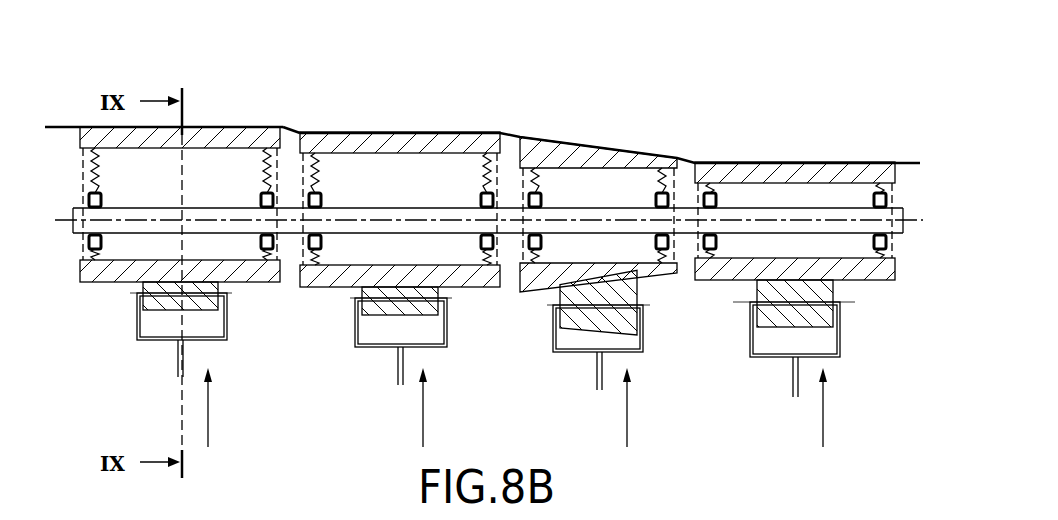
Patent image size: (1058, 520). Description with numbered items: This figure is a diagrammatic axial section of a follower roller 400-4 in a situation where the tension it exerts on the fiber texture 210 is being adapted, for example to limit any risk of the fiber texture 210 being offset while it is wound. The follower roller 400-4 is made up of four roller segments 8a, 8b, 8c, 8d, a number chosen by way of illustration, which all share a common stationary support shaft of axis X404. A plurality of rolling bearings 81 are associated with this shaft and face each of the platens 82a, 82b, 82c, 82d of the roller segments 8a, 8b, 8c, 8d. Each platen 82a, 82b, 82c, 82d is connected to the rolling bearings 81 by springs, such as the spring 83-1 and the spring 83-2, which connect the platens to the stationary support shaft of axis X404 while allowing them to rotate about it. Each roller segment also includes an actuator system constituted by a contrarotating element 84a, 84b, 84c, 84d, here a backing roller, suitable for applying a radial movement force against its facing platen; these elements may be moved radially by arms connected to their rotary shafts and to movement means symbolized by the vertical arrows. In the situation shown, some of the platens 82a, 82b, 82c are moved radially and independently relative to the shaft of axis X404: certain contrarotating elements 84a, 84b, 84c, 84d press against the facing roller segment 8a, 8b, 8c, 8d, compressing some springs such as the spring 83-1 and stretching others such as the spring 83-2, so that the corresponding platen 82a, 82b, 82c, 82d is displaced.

The fiber texture 210 is at (60, 125).
The follower roller 400-4 is at (284, 88).
The platen 82a is at (218, 132).
The platen 82b is at (395, 132).
The platen 82c is at (600, 148).
The platen 82d is at (807, 164).
The roller segment 8a is at (96, 288).
The roller segment 8b is at (317, 294).
The roller segment 8c is at (533, 299).
The roller segment 8d is at (720, 289).
The rolling bearings 81 is at (88, 199).
The spring 83-1 is at (262, 253).
The spring 83-2 is at (100, 175).
The contrarotating element 84a is at (165, 318).
The contrarotating element 84b is at (387, 322).
The contrarotating element 84c is at (577, 340).
The contrarotating element 84d is at (780, 334).
The axis of the stationary support shaft X404 is at (917, 224).